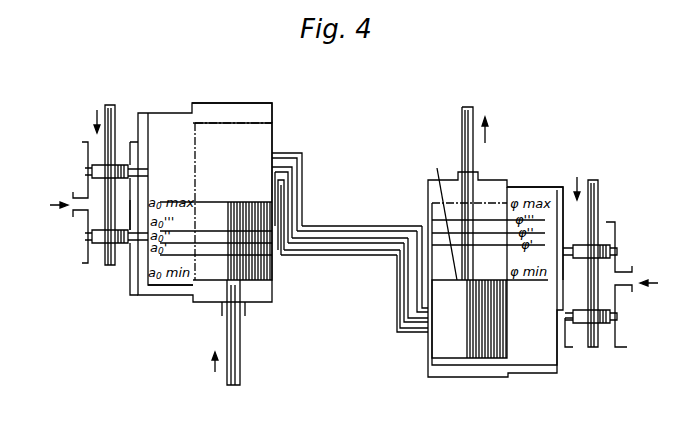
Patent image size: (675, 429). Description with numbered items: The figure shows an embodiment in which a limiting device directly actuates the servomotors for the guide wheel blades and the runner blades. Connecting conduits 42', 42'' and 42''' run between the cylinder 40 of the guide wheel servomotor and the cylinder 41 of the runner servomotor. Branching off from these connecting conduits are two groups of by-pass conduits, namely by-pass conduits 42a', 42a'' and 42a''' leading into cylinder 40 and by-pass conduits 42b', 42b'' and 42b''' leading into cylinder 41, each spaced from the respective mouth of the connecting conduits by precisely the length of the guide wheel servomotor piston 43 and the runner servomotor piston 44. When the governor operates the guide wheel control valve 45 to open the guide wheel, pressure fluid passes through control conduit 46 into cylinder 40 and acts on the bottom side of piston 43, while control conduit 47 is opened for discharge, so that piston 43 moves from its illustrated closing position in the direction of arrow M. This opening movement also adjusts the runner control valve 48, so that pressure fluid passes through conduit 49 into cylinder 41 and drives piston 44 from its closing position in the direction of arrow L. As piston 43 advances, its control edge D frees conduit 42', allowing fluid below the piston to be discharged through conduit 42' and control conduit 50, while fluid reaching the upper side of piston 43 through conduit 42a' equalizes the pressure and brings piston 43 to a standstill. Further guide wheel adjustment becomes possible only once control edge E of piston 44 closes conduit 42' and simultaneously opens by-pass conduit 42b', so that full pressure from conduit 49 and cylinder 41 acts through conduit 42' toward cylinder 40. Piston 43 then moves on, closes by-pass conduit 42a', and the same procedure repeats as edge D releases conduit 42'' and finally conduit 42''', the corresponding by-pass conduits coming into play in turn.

The cylinder of the guide wheel servomotor 40 is at (273, 110).
The cylinder of the runner servomotor 41 is at (474, 379).
The connecting conduit 42' is at (340, 264).
The connecting conduit 42'' is at (348, 222).
The connecting conduit 42''' is at (359, 217).
The by-pass conduit 42a' is at (314, 213).
The by-pass conduit 42a'' is at (314, 194).
The by-pass conduit 42a''' is at (316, 177).
The by-pass conduit 42b' is at (388, 291).
The by-pass conduit 42b'' is at (388, 280).
The by-pass conduit 42b''' is at (388, 269).
The guide wheel servomotor piston 43 is at (253, 266).
The runner servomotor piston 44 is at (455, 335).
The guide wheel control valve 45 is at (92, 222).
The control conduit 46 is at (142, 272).
The control conduit 47 is at (163, 112).
The runner control valve 48 is at (603, 265).
The conduit 49 is at (560, 354).
The control conduit 50 is at (548, 191).
The control edge of piston 43 D is at (221, 283).
The control edge of piston 44 E is at (442, 213).
The arrow indicating movement of piston 44 L is at (482, 193).
The arrow indicating movement of piston 43 M is at (202, 371).